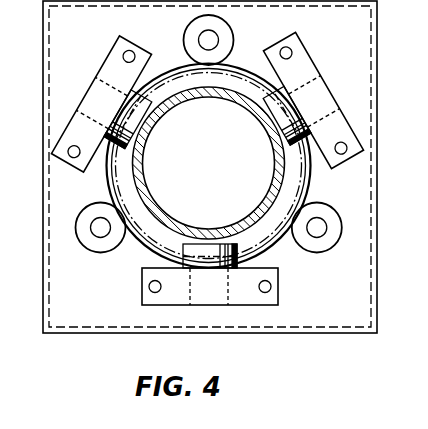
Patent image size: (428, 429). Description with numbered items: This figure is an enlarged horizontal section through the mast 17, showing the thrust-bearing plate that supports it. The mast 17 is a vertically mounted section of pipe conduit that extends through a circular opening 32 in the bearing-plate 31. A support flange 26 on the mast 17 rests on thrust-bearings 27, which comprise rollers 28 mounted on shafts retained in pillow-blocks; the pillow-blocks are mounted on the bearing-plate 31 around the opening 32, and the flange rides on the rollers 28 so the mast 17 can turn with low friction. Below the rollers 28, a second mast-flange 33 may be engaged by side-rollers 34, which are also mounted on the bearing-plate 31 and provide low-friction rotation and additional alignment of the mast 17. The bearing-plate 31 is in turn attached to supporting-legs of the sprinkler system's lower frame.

The tubular member 17 is at (248, 232).
The ring 26 is at (239, 78).
The clamp plate 27 is at (207, 158).
The clamping pad 28 is at (103, 148).
The frame 31 is at (52, 25).
The inner ring 32 is at (277, 243).
The outer ring 33 is at (148, 245).
The roller 34 is at (224, 25).